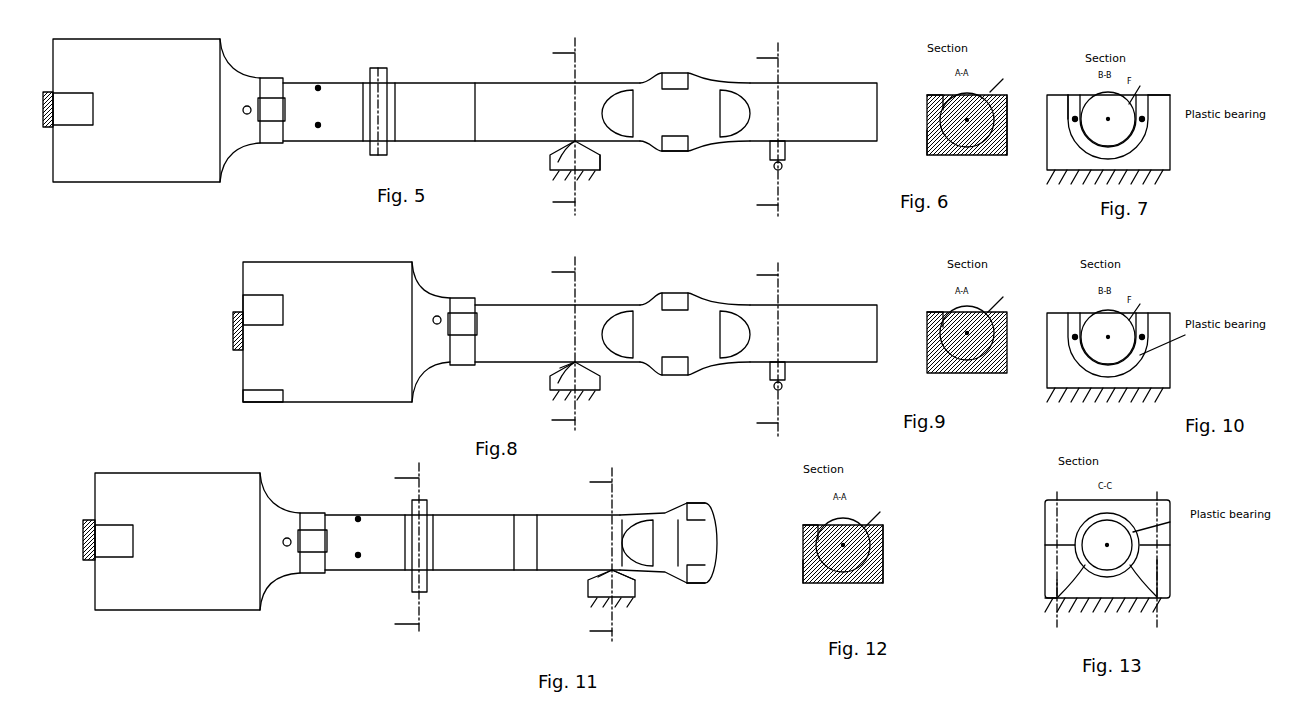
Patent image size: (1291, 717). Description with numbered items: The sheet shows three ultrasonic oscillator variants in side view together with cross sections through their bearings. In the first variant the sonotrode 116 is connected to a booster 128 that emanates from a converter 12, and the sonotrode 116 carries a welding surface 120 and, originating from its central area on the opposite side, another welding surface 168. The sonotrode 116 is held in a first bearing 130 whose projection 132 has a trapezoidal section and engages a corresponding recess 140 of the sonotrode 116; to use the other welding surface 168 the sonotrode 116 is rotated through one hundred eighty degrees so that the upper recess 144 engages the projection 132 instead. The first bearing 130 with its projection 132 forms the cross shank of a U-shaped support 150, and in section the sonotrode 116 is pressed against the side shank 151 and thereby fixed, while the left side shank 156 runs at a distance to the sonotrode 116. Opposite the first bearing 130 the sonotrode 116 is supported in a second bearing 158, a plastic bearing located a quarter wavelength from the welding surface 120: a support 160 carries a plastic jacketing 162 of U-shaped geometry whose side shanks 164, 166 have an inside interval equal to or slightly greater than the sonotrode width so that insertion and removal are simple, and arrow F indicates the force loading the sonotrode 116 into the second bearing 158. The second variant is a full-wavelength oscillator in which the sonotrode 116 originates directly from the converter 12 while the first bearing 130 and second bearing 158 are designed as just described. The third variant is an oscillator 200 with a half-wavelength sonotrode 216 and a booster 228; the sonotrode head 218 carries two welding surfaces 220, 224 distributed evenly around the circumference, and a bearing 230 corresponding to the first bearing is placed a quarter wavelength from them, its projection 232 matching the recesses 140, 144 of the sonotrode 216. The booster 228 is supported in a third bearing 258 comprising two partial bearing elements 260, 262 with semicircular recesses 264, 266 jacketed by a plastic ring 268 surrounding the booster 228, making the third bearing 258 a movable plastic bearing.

In FIG. 5, the converter 12 is at (208, 64).
In FIG. 8, the converter 12 is at (330, 278).
In FIG. 11, the converter 12 is at (160, 497).
In FIG. 5, the sonotrode 116 is at (823, 100).
In FIG. 6, the sonotrode 116 is at (1002, 137).
In FIG. 7, the sonotrode 116 is at (1125, 110).
In FIG. 8, the sonotrode 116 is at (823, 320).
In FIG. 9, the sonotrode 116 is at (1002, 355).
In FIG. 5, the welding surface 120 is at (668, 73).
In FIG. 8, the welding surface 120 is at (676, 334).
In FIG. 5, the booster 128 is at (418, 97).
In FIG. 5, the first bearing 130 is at (608, 166).
In FIG. 6, the first bearing 130 is at (970, 156).
In FIG. 9, the first bearing 130 is at (970, 374).
In FIG. 5, the projection 132 is at (550, 158).
In FIG. 8, the projection 132 is at (600, 380).
In FIG. 8, the recess 140 is at (552, 366).
In FIG. 11, the recess 140 is at (600, 558).
In FIG. 5, the upper recess 144 is at (578, 88).
In FIG. 8, the upper recess 144 is at (578, 310).
In FIG. 11, the upper recess 144 is at (614, 518).
In FIG. 6, the U-shaped support 150 is at (927, 100).
In FIG. 9, the U-shaped support 150 is at (927, 330).
In FIG. 12, the U-shaped support 150 is at (805, 528).
In FIG. 6, the side shank 151 is at (927, 138).
In FIG. 12, the side shank 151 is at (803, 564).
In FIG. 6, the left side shank 156 is at (1004, 112).
In FIG. 12, the left side shank 156 is at (883, 549).
In FIG. 5, the second bearing 158 is at (785, 163).
In FIG. 7, the second bearing 158 is at (1168, 182).
In FIG. 8, the second bearing 158 is at (785, 385).
In FIG. 7, the support 160 is at (1152, 136).
In FIG. 7, the plastic jacketing 162 is at (1066, 104).
In FIG. 7, the side shank 164 is at (1162, 96).
In FIG. 7, the side shank 166 is at (1070, 100).
In FIG. 5, the welding surface 168 is at (676, 152).
In FIG. 11, the oscillator 200 is at (454, 619).
In FIG. 11, the sonotrode 216 is at (557, 538).
In FIG. 12, the sonotrode 216 is at (880, 566).
In FIG. 11, the sonotrode head 218 is at (705, 520).
In FIG. 11, the welding surface 220 is at (690, 503).
In FIG. 11, the welding surface 224 is at (700, 583).
In FIG. 11, the booster 228 is at (452, 548).
In FIG. 13, the booster 228 is at (1160, 601).
In FIG. 11, the bearing 230 is at (590, 600).
In FIG. 12, the bearing 230 is at (850, 584).
In FIG. 11, the projection 232 is at (630, 592).
In FIG. 11, the third bearing 258 is at (412, 585).
In FIG. 13, the third bearing 258 is at (1181, 592).
In FIG. 13, the partial bearing element 260 is at (1148, 512).
In FIG. 13, the partial bearing element 262 is at (1058, 600).
In FIG. 13, the semicircular recess 264 is at (1075, 528).
In FIG. 13, the semicircular recess 266 is at (1052, 586).
In FIG. 13, the ring 268 is at (1170, 572).